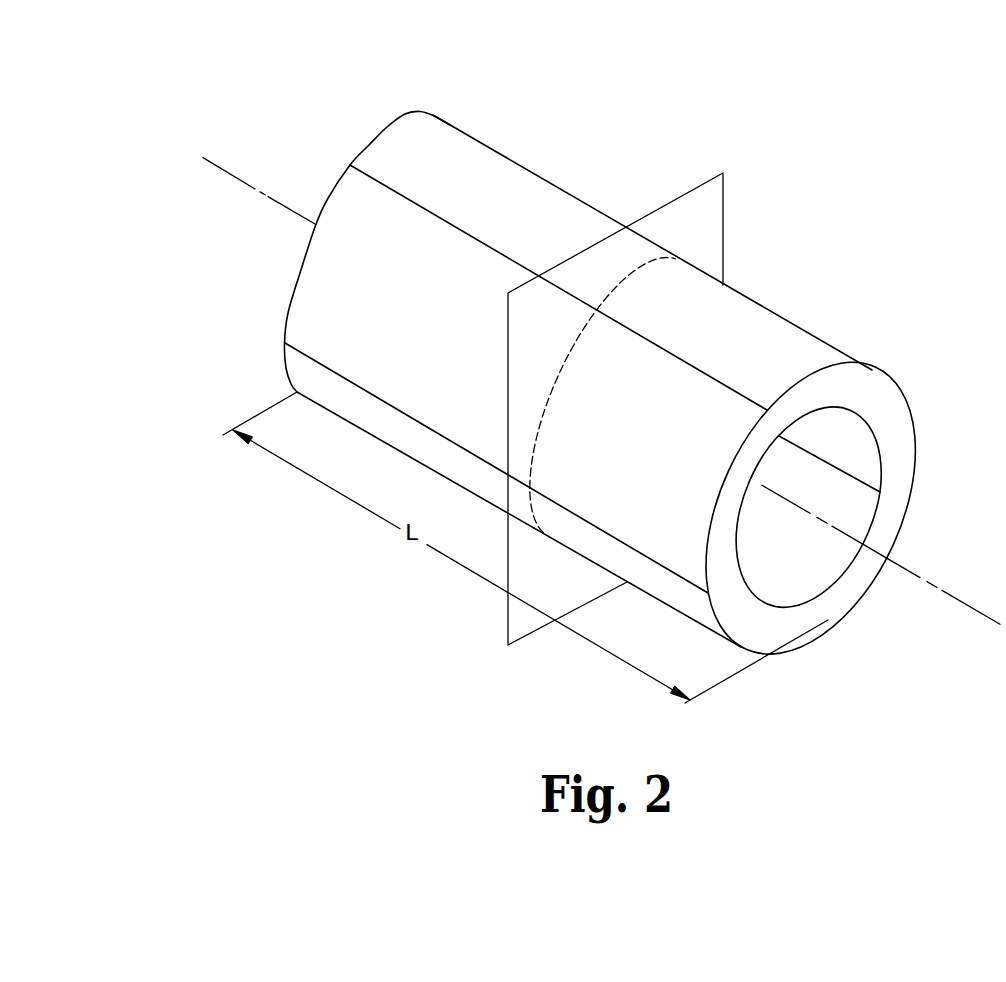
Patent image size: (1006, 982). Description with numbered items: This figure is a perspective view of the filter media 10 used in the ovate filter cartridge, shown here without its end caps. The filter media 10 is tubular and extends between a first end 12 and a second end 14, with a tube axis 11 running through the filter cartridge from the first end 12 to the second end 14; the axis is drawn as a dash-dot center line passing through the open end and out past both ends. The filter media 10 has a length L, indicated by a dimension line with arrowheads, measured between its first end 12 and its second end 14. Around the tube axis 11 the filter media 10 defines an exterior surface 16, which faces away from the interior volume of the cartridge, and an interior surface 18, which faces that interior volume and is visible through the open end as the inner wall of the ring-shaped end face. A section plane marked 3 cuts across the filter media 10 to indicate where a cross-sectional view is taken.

The filter media 10 is at (630, 369).
The tube axis 11 is at (965, 605).
The first end 12 is at (872, 387).
The second end 14 is at (405, 114).
The exterior surface 16 is at (760, 320).
The interior surface 18 is at (777, 572).
The section plane 3 is at (615, 409).